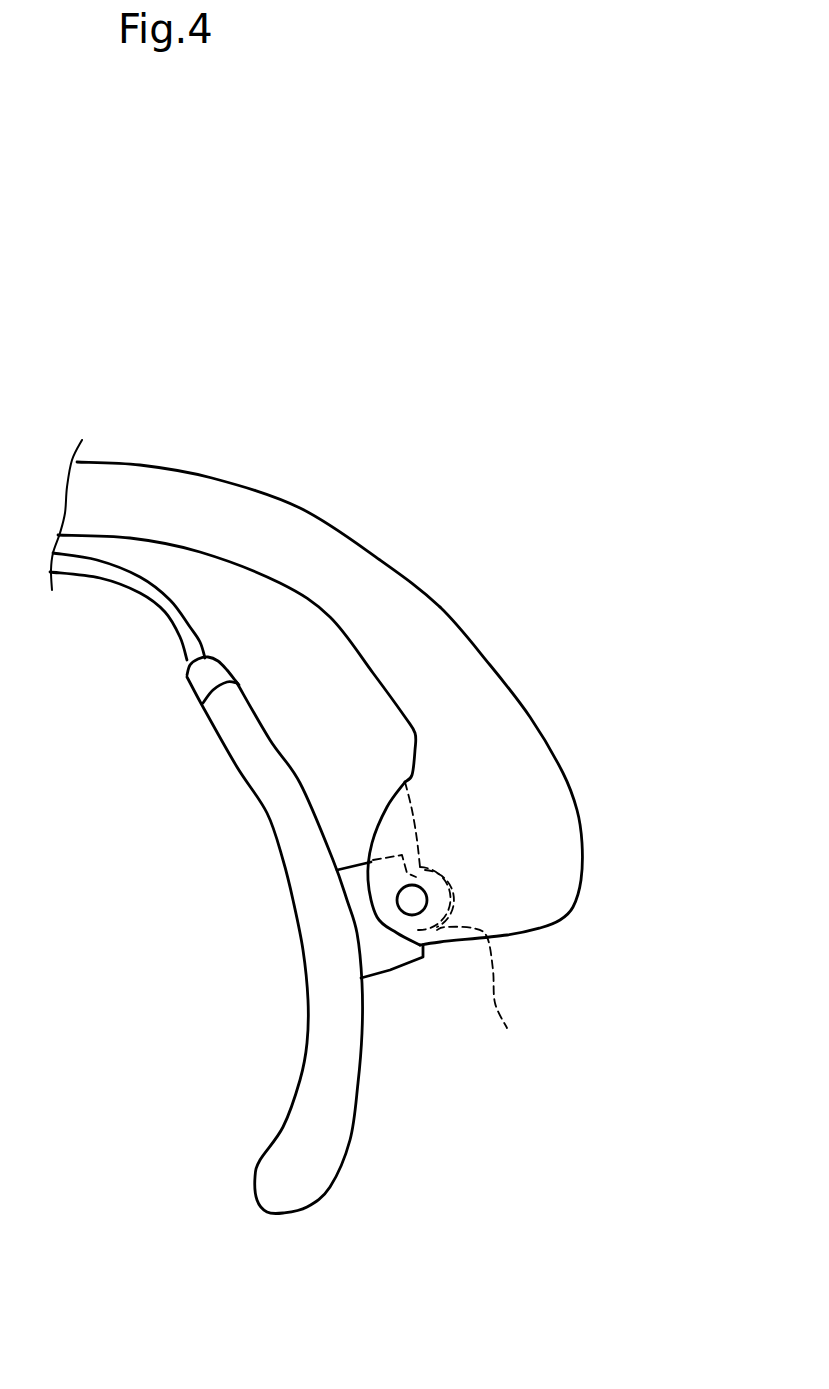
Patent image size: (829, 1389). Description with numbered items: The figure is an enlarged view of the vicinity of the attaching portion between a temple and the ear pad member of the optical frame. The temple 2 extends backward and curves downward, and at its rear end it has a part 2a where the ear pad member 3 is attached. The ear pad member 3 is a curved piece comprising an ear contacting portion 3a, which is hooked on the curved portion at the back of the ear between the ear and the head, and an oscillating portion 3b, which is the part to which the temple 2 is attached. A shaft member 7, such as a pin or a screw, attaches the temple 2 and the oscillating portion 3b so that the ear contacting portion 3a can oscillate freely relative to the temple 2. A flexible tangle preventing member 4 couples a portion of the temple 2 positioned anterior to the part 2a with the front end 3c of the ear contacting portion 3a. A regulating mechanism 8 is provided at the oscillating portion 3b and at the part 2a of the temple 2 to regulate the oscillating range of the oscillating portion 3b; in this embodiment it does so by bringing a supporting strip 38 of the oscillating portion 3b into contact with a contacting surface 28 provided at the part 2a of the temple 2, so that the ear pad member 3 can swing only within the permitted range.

The temple 2 is at (373, 672).
The part of the temple where the ear pad member is attached 2a is at (557, 838).
The ear pad member 3 is at (252, 1014).
The ear contacting portion 3a is at (283, 822).
The oscillating portion 3b is at (377, 945).
The front end of the ear contacting portion 3c is at (197, 680).
The flexible tangle preventing member 4 is at (108, 573).
The shaft member 7 is at (415, 900).
The regulating mechanism 8 is at (467, 944).
The contacting surface 28 is at (484, 997).
The supporting strip 38 is at (423, 950).